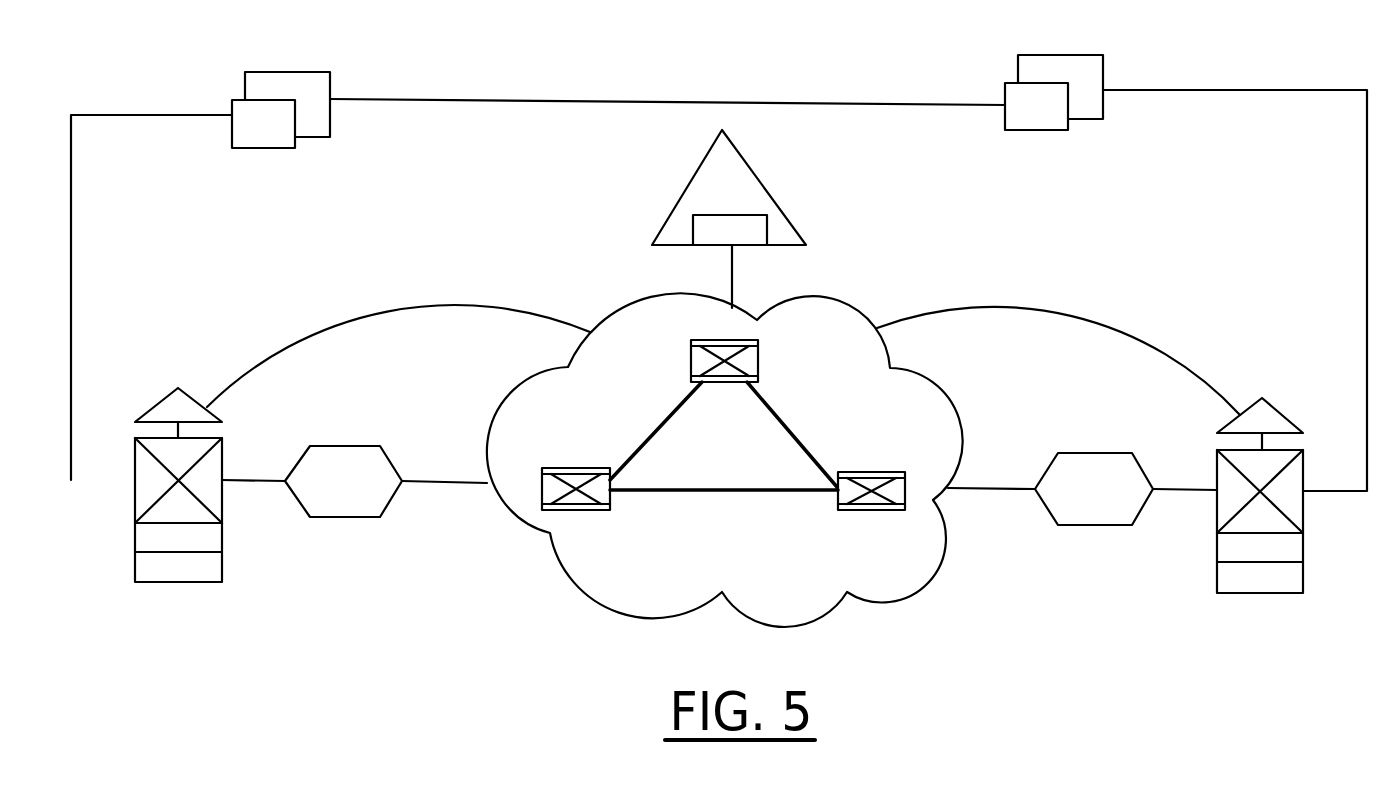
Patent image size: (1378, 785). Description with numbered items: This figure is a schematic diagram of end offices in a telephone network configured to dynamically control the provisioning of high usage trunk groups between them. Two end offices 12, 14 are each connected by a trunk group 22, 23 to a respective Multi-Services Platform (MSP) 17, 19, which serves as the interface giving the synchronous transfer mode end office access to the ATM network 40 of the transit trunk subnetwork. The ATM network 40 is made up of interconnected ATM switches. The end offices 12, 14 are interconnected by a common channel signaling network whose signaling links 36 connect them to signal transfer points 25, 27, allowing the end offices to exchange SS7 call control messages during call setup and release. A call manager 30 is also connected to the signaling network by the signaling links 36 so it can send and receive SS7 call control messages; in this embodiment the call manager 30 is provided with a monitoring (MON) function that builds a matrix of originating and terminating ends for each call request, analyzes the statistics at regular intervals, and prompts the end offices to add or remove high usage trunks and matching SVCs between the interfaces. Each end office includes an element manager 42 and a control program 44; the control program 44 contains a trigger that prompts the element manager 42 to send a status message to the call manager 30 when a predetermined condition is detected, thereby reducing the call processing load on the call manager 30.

The end office 12 is at (135, 455).
The end office 14 is at (1303, 477).
The Multi-Services Platform 17 is at (353, 446).
The Multi-Services Platform 19 is at (1083, 527).
The trunk group 22 is at (269, 478).
The trunk group 23 is at (1180, 487).
The signal transfer point 25 is at (300, 72).
The signal transfer point 27 is at (1072, 55).
The call manager 30 is at (770, 195).
The common channel signaling links 36 is at (115, 106).
The ATM network 40 is at (557, 572).
The element manager 42 is at (135, 540).
The control program 44 is at (135, 570).